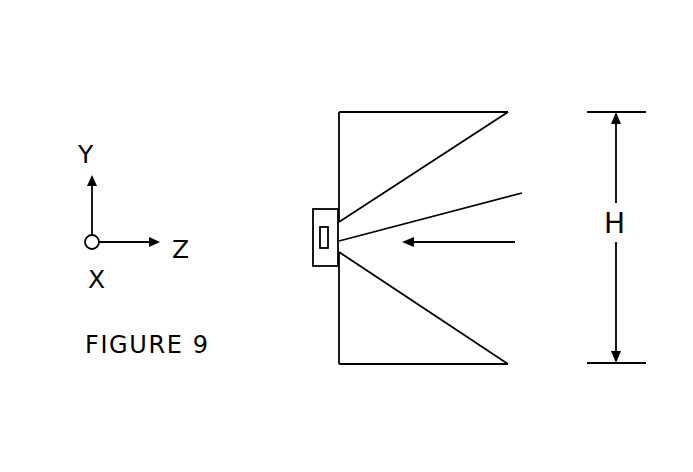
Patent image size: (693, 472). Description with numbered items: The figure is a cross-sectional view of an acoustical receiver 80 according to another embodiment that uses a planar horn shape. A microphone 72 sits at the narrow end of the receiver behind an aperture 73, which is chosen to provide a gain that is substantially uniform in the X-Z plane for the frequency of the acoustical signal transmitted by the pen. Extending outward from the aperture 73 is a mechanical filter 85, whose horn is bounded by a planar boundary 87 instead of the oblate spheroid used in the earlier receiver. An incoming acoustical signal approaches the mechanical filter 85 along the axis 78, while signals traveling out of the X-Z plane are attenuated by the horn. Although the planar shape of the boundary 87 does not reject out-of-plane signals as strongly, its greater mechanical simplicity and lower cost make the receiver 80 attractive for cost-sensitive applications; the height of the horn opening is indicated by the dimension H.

The receiver 80 is at (206, 101).
The planar boundary 87 is at (387, 191).
The mechanical filter 85 is at (402, 358).
The microphone 72 is at (323, 235).
The aperture 73 is at (447, 206).
The axis 78 is at (473, 242).